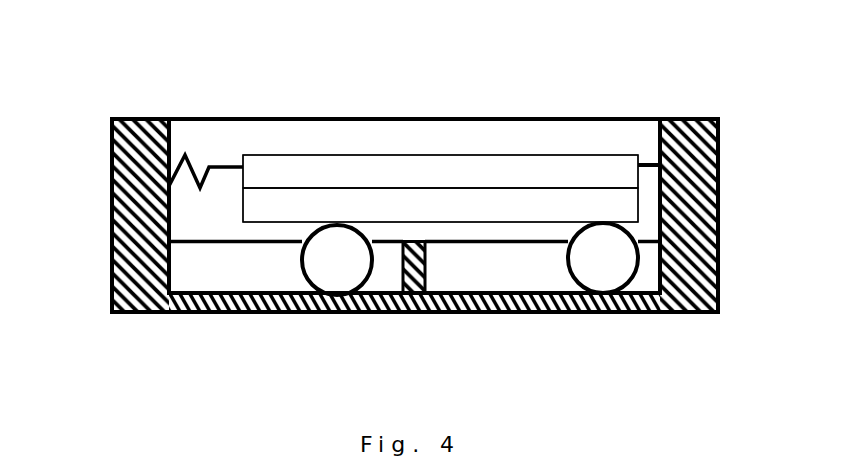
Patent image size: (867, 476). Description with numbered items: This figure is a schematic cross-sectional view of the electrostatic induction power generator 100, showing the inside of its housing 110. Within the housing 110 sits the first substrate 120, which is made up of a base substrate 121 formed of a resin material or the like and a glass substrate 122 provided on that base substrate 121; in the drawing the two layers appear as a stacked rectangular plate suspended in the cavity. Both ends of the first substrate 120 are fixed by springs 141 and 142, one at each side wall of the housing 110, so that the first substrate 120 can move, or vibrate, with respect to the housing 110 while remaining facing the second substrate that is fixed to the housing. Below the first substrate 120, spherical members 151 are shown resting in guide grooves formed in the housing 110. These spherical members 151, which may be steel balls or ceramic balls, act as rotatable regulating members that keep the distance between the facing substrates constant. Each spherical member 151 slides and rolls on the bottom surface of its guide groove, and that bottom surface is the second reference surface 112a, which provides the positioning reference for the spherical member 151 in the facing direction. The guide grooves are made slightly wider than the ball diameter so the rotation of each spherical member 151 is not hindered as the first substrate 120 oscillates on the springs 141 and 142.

The electrostatic induction power generator 100 is at (695, 72).
The housing 110 is at (697, 213).
The second reference surface 112a is at (212, 290).
The first substrate 120 is at (292, 145).
The base substrate 121 is at (352, 168).
The glass substrate 122 is at (545, 203).
The spring 141 is at (648, 163).
The spring 142 is at (227, 165).
The spherical member 151 is at (328, 270).